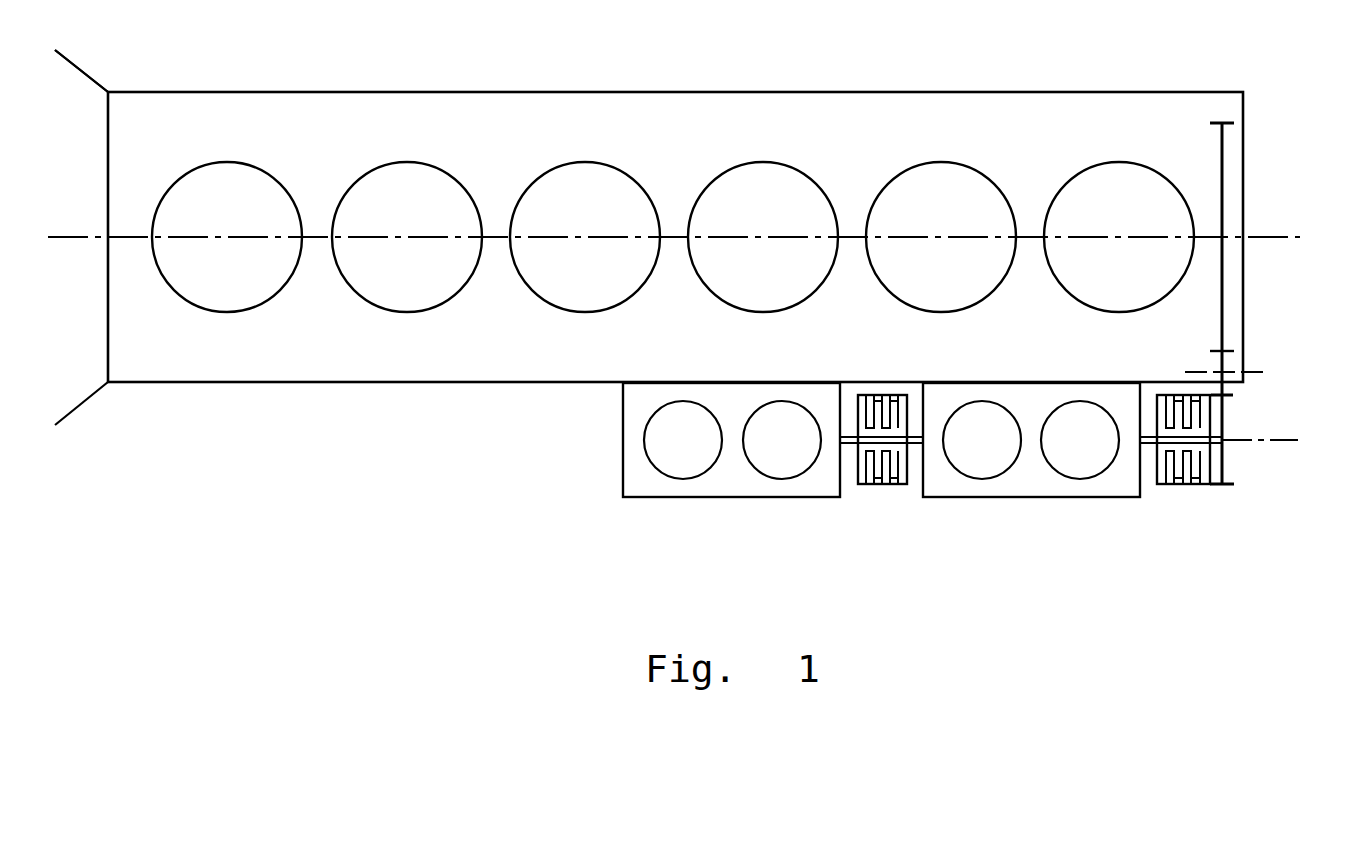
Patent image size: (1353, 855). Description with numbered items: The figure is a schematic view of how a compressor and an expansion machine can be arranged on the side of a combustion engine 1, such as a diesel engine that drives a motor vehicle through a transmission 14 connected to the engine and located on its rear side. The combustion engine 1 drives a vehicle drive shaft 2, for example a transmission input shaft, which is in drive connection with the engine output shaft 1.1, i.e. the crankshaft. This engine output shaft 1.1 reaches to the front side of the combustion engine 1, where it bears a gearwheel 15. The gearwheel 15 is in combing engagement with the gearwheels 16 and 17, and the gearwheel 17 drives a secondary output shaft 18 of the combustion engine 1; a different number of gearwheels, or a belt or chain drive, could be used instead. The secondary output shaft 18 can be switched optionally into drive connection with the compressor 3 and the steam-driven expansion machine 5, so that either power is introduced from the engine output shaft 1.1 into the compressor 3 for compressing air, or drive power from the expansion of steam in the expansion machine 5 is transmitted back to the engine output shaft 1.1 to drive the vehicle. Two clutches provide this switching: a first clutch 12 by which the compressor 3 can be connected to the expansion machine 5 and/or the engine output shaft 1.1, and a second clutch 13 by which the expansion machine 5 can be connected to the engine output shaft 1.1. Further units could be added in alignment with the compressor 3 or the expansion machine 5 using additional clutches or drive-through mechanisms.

The combustion engine 1 is at (428, 367).
The engine output shaft 1.1 is at (313, 237).
The vehicle drive shaft 2 is at (83, 238).
The compressor 3 is at (734, 483).
The steam-driven expansion machine 5 is at (1028, 475).
The first clutch 12 is at (882, 492).
The second clutch 13 is at (1185, 489).
The transmission 14 is at (85, 87).
The gearwheel 15 is at (1222, 138).
The gearwheel 16 is at (1225, 383).
The gearwheel 17 is at (1225, 480).
The secondary output shaft 18 is at (1278, 440).